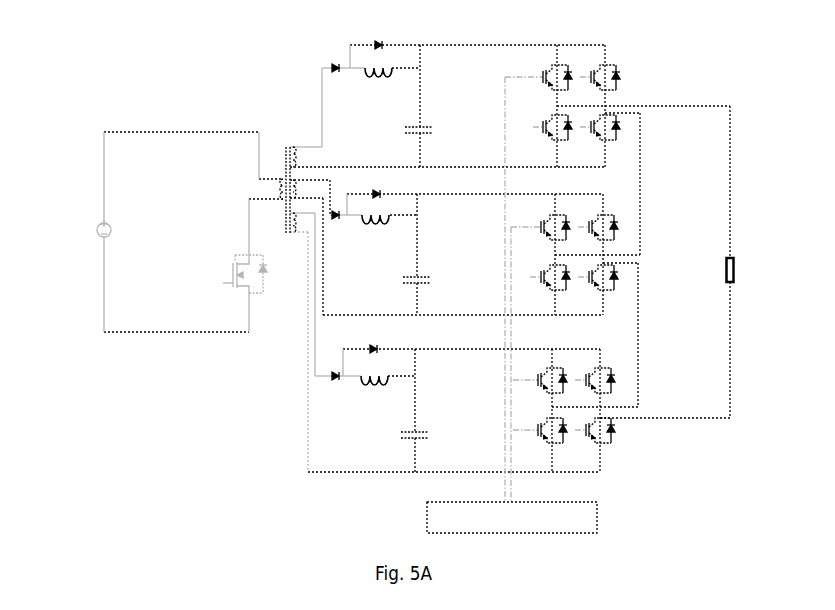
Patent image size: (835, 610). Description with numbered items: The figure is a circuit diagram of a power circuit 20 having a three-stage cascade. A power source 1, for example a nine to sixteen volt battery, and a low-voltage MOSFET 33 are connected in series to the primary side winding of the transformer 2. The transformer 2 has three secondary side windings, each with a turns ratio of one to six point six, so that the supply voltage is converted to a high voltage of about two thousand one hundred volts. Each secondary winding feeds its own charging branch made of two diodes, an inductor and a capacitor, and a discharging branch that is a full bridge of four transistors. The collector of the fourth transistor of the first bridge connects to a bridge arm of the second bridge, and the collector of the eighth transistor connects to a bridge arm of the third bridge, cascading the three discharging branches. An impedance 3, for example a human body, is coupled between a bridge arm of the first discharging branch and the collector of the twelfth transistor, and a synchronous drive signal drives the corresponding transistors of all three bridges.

The power circuit 20 is at (290, 50).
The power source 1 is at (149, 232).
The transformer 2 is at (336, 183).
The impedance 3 is at (773, 262).
The low-voltage MOSFET 33 is at (263, 265).